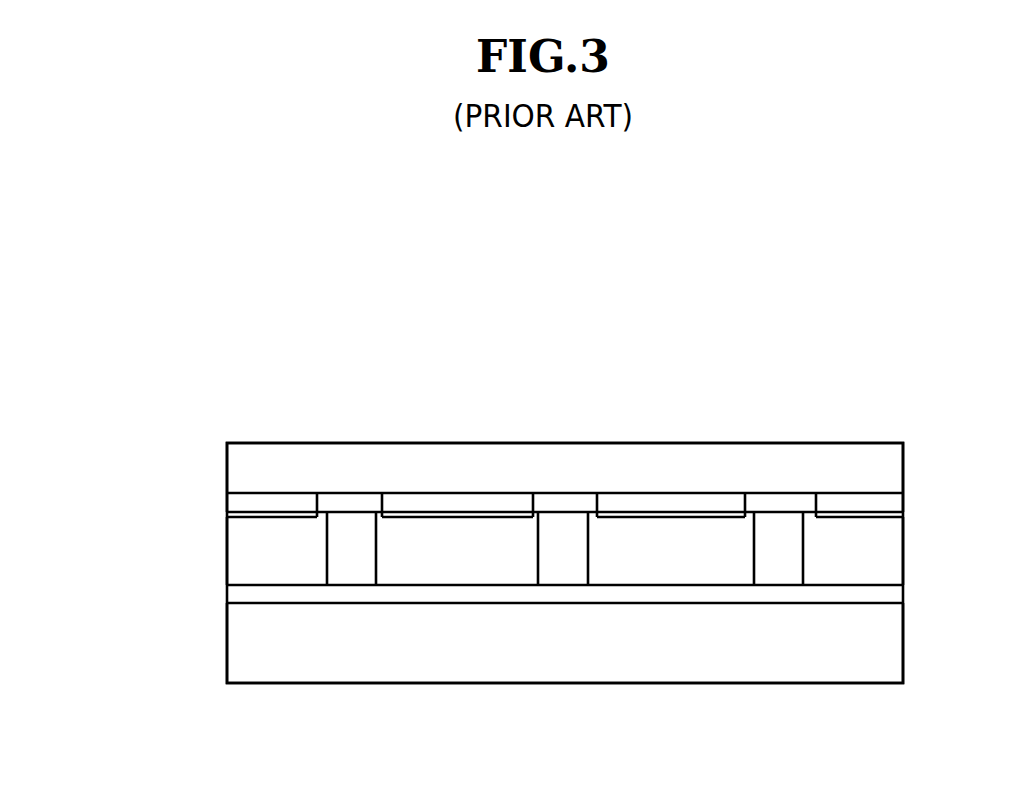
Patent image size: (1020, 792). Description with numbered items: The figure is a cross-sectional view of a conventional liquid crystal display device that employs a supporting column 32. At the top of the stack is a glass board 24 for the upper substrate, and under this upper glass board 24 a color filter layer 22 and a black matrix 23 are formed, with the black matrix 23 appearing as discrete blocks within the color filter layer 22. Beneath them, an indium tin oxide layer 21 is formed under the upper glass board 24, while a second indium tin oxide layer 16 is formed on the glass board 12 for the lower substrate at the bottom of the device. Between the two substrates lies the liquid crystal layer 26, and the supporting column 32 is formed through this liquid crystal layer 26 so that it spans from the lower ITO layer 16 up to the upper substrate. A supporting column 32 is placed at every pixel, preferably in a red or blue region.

The glass board for the lower substrate 12 is at (250, 647).
The indium tin oxide layer 16 is at (240, 597).
The indium tin oxide layer 21 is at (233, 514).
The color filter layer 22 is at (237, 497).
The black matrix 23 is at (357, 495).
The glass board for the upper substrate 24 is at (238, 469).
The liquid crystal layer 26 is at (659, 565).
The supporting column 32 is at (782, 568).